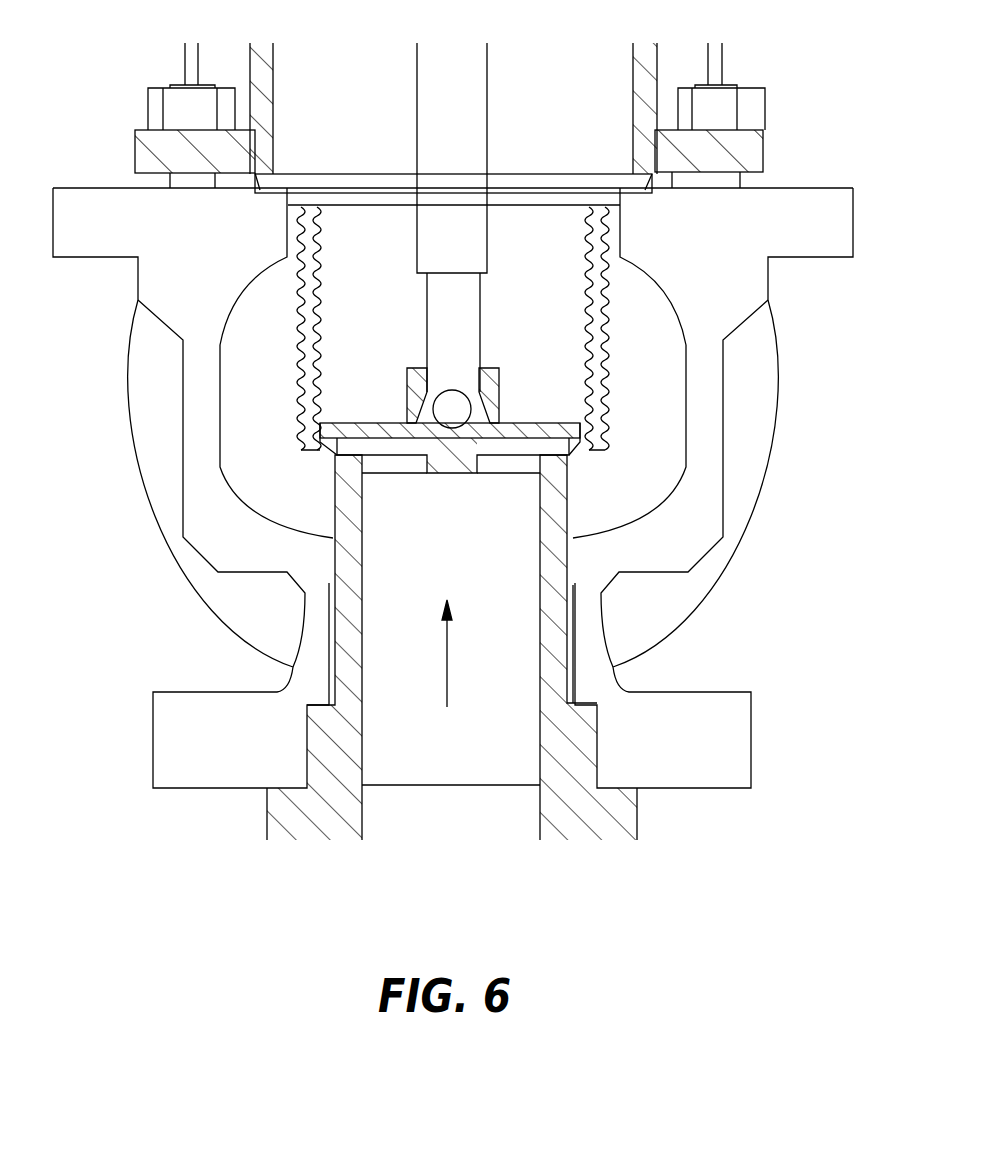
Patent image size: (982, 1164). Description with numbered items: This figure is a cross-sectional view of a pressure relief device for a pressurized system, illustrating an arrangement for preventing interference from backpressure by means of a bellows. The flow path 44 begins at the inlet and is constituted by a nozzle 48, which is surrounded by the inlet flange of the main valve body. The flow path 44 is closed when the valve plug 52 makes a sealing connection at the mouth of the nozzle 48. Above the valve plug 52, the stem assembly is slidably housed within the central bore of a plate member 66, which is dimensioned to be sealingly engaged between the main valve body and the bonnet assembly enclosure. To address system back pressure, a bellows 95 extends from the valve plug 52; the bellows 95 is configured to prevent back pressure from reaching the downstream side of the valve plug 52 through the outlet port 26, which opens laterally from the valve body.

The plate member 66 is at (345, 177).
The bellows 95 is at (300, 341).
The outlet port 26 is at (653, 373).
The valve plug 52 is at (578, 455).
The flow path 44 is at (448, 672).
The nozzle 48 is at (628, 833).